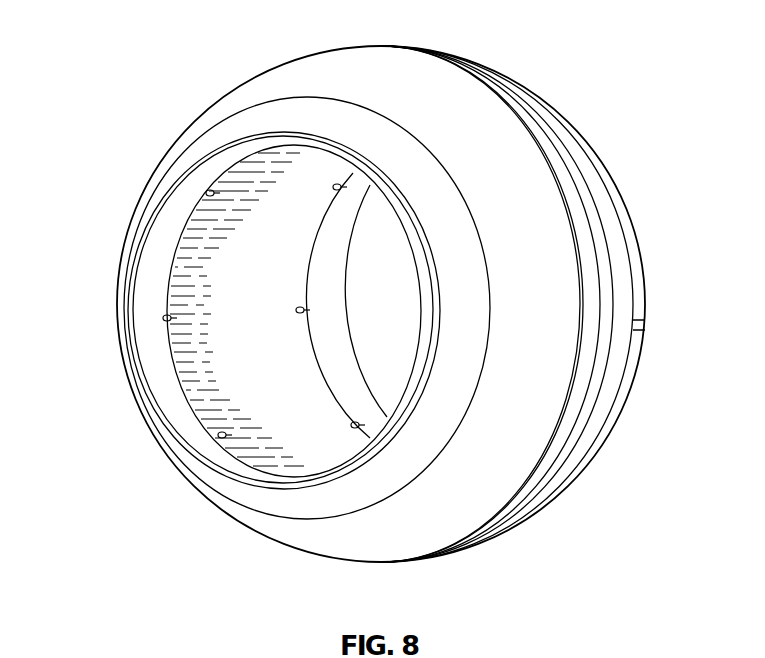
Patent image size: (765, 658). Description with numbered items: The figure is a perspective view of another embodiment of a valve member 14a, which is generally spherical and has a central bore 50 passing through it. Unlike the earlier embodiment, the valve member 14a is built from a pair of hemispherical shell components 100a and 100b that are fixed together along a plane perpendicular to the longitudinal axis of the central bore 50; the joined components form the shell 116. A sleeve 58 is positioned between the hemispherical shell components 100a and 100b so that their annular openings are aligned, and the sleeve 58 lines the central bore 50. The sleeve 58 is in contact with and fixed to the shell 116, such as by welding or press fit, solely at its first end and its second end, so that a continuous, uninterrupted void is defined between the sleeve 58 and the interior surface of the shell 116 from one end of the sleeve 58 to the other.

The valve member 14a is at (142, 43).
The central bore 50 is at (185, 265).
The sleeve 58 is at (193, 373).
The hemispherical shell component 100a is at (235, 518).
The hemispherical shell component 100b is at (630, 230).
The shell 116 is at (573, 487).